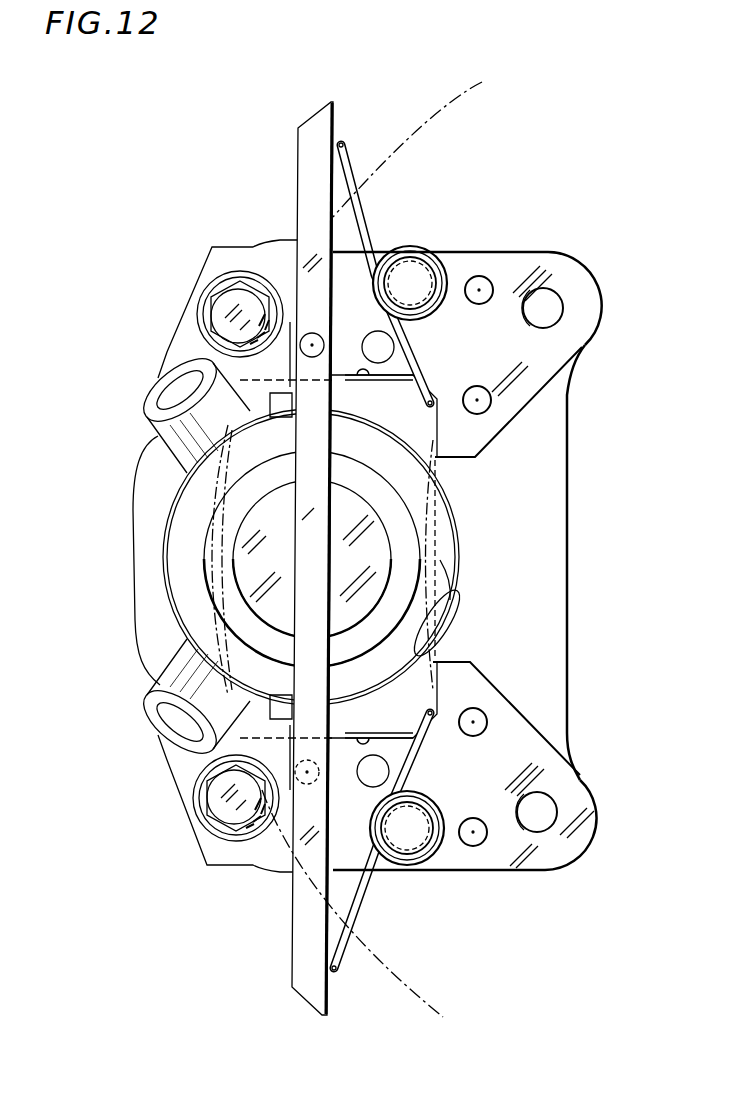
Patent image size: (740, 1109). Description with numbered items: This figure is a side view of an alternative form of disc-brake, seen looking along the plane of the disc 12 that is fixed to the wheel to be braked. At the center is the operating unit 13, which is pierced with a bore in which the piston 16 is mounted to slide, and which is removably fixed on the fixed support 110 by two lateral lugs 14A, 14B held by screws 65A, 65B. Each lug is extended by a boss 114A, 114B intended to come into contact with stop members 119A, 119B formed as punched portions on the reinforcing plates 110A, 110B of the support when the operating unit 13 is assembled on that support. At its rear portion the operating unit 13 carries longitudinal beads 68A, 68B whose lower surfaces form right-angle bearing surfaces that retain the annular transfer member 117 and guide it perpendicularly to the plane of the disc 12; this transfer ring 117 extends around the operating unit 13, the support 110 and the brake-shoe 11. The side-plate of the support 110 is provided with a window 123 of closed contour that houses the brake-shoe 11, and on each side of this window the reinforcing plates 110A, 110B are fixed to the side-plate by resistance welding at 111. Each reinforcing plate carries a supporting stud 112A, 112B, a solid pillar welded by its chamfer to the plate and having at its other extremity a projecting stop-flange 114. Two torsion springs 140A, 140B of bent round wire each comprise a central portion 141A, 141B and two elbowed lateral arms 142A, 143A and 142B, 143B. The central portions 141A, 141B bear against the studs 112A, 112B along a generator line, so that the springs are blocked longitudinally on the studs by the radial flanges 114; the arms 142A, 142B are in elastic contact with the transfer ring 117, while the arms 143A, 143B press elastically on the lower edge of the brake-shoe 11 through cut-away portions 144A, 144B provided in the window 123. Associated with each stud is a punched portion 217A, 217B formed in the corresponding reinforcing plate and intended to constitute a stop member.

The brake-shoe 11 is at (387, 414).
The disc 12 is at (416, 1005).
The operating unit 13 is at (168, 636).
The lug 14A is at (200, 292).
The lug 14B is at (200, 815).
The piston 16 is at (240, 506).
The screw 65A is at (213, 323).
The screw 65B is at (213, 797).
The longitudinal bead 68A is at (288, 412).
The longitudinal bead 68B is at (288, 700).
The fixed support 110 is at (568, 876).
The reinforcing plate 110A is at (538, 413).
The reinforcing plate 110B is at (538, 718).
The resistance weld 111 is at (485, 282).
The supporting stud 112A is at (407, 280).
The supporting stud 112B is at (398, 832).
The stop-flange 114 is at (505, 300).
The boss 114A is at (293, 318).
The boss 114B is at (285, 850).
The annular transfer member 117 is at (316, 110).
The punched portion 119A is at (314, 358).
The punched portion 119B is at (312, 760).
The window 123 is at (429, 666).
The torsion spring 140A is at (369, 198).
The torsion spring 140B is at (446, 866).
The central portion 141A is at (440, 265).
The central portion 141B is at (441, 825).
The lateral arm 142A is at (352, 152).
The lateral arm 142B is at (338, 976).
The lateral arm 143A is at (430, 371).
The lateral arm 143B is at (445, 700).
The cut-away portion 144A is at (347, 372).
The cut-away portion 144B is at (349, 750).
The punched portion 217A is at (412, 348).
The punched portion 217B is at (385, 734).